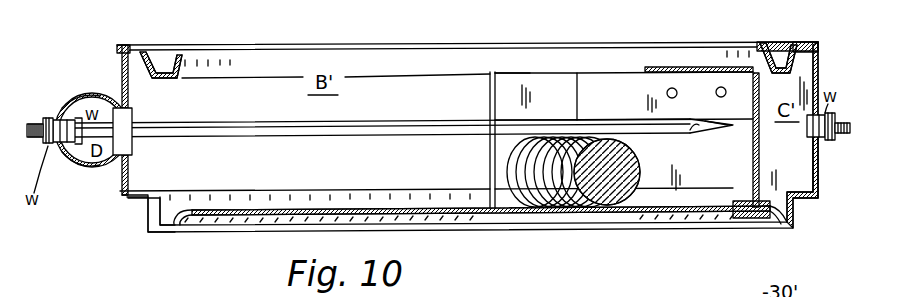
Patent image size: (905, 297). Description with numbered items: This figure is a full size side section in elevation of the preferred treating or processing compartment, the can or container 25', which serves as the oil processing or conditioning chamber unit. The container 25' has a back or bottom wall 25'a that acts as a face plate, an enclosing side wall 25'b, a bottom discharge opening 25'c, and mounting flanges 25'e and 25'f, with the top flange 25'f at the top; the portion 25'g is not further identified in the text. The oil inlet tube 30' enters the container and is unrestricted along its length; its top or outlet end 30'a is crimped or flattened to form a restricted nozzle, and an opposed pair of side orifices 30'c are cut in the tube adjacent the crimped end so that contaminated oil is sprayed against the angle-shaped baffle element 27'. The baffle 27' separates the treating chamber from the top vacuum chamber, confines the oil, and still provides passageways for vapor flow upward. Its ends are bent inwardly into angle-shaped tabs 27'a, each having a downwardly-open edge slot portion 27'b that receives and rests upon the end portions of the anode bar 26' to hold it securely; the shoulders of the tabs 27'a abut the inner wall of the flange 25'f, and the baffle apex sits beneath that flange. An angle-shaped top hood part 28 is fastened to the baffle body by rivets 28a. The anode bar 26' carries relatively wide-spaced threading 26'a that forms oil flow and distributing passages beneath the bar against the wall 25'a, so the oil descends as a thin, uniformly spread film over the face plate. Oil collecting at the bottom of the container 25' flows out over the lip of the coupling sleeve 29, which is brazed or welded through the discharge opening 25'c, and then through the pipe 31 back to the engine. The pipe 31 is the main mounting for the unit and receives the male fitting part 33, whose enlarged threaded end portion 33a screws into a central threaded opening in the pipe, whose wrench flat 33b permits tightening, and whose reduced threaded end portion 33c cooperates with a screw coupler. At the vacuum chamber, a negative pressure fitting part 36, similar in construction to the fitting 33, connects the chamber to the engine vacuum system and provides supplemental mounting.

The can or container 25' is at (467, 123).
The back or bottom wall 25'a is at (480, 229).
The enclosing side wall 25'b is at (131, 114).
The bottom discharge opening 25'c is at (166, 167).
The mounting flange 25'e is at (146, 228).
The top flange 25'f is at (800, 31).
The side wall 25'g is at (785, 140).
The anode bar 26' is at (577, 197).
The threading 26'a is at (602, 206).
The baffle element 27' is at (559, 85).
The angle-shaped end portion or tab 27'a is at (488, 61).
The edge slot portion 27'b is at (514, 164).
The top hood part 28 is at (688, 67).
The rivets 28a is at (667, 92).
The coupling sleeve 29 is at (131, 112).
The oil inlet tube 30' is at (382, 115).
The outlet end 30'a is at (713, 151).
The side orifices 30'c is at (672, 143).
The pipe 31 is at (100, 165).
The male fitting part 33 is at (48, 143).
The enlarged male threaded end portion 33a is at (70, 156).
The wrench flat 33b is at (55, 114).
The reduced male threaded end portion 33c is at (43, 126).
The negative pressure fitting part 36 is at (828, 141).